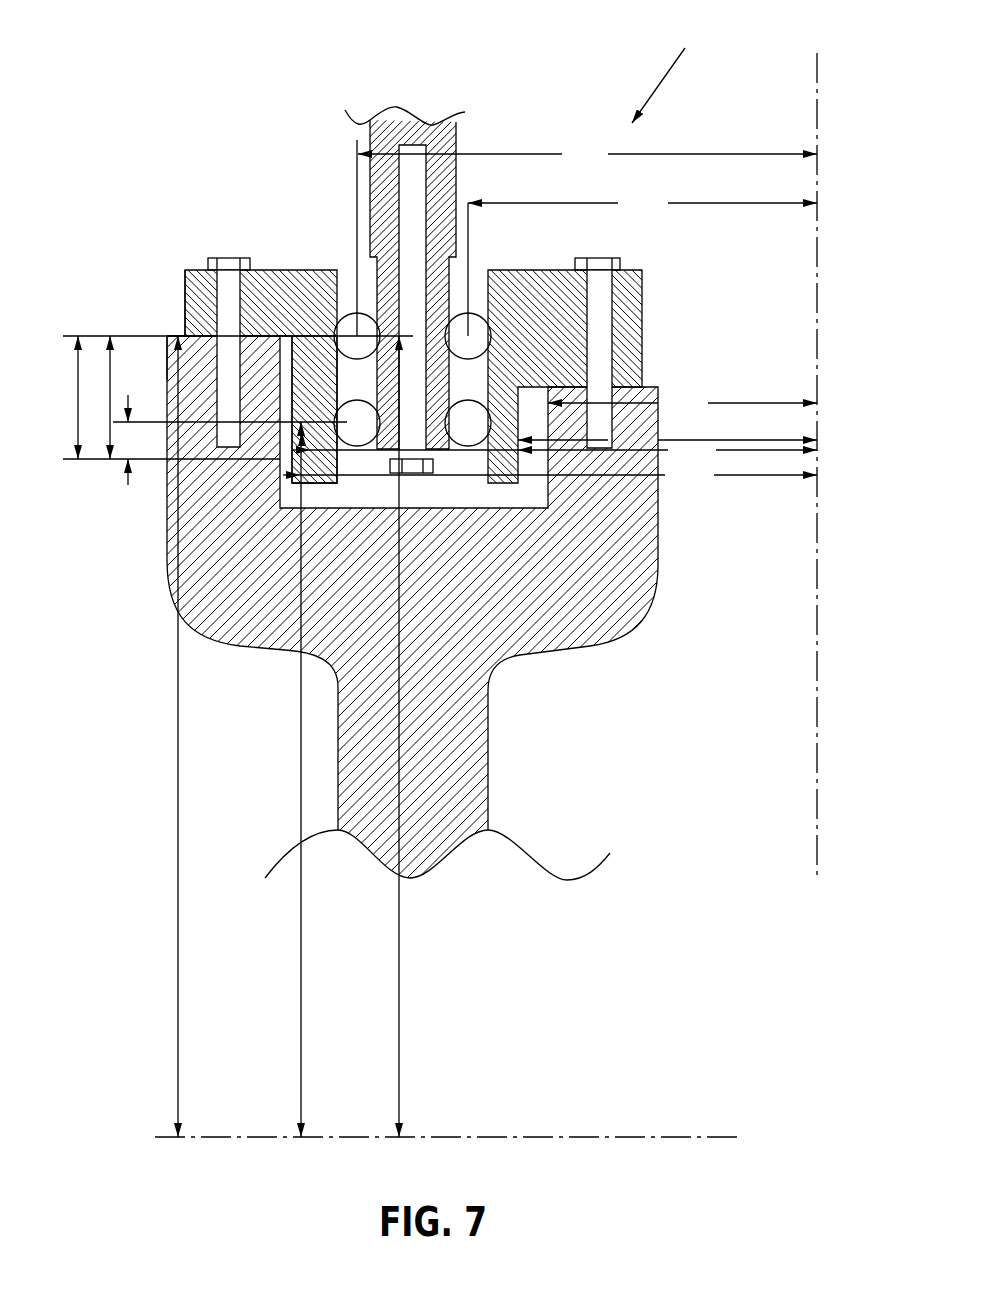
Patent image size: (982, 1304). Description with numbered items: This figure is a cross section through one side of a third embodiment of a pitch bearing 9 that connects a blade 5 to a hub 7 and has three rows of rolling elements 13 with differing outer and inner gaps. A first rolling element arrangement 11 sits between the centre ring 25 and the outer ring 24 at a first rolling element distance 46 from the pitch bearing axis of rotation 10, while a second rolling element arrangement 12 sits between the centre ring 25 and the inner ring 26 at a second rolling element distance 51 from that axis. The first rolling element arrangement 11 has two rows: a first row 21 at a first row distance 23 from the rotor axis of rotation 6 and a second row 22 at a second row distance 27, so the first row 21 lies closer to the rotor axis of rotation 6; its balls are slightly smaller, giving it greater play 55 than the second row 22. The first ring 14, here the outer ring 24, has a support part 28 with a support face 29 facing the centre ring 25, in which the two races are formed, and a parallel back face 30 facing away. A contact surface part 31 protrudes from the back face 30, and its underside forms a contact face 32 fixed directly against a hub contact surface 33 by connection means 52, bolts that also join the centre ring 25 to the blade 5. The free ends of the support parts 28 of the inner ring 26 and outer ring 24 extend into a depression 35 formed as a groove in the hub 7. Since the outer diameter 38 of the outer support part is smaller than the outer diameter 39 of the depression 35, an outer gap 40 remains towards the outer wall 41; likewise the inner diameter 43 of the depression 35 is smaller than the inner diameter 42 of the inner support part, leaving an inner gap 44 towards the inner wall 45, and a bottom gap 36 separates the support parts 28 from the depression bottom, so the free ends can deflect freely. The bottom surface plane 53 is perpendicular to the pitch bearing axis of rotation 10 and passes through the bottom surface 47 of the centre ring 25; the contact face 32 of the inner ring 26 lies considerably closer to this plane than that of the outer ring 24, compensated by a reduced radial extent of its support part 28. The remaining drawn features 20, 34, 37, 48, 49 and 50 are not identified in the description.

The blade 5 is at (401, 128).
The rotor axis of rotation 6 is at (530, 1136).
The hub 7 is at (455, 750).
The pitch bearing 9 is at (666, 73).
The pitch bearing axis of rotation 10 is at (820, 738).
The first rolling element arrangement 11 is at (352, 300).
The second rolling element arrangement 12 is at (470, 250).
The rolling elements 13 is at (508, 292).
The first ring 14 is at (262, 290).
The outer bearing block 20 is at (638, 282).
The first row 21 is at (330, 470).
The second row 22 is at (327, 300).
The first row distance 23 is at (300, 779).
The outer ring 24 is at (271, 311).
The centre ring 25 is at (550, 513).
The inner ring 26 is at (564, 349).
The second row distance 27 is at (400, 736).
The support part 28 is at (298, 487).
The support face 29 is at (345, 307).
The back face 30 is at (293, 490).
The contact surface part 31 is at (185, 318).
The contact face 32 is at (175, 335).
The hub contact surface 33 is at (177, 350).
The distance 34 is at (175, 736).
The depression 35 is at (520, 497).
The bottom gap 36 is at (322, 497).
The bottom face 37 is at (527, 508).
The outer diameter of the support part 38 is at (554, 452).
The outer diameter of the depression 39 is at (550, 477).
The outer gap 40 is at (262, 300).
The outer wall 41 is at (280, 472).
The inner diameter of the support part 42 is at (667, 439).
The inner diameter of the depression 43 is at (682, 403).
The inner gap 44 is at (543, 417).
The inner wall 45 is at (560, 390).
The first rolling element distance 46 is at (587, 154).
The bottom surface 47 is at (413, 472).
The distance 48 is at (128, 456).
The distance 49 is at (56, 397).
The distance 50 is at (94, 397).
The second rolling element distance 51 is at (642, 203).
The connection means 52 is at (597, 262).
The bottom surface plane 53 is at (165, 575).
The play 55 is at (303, 462).